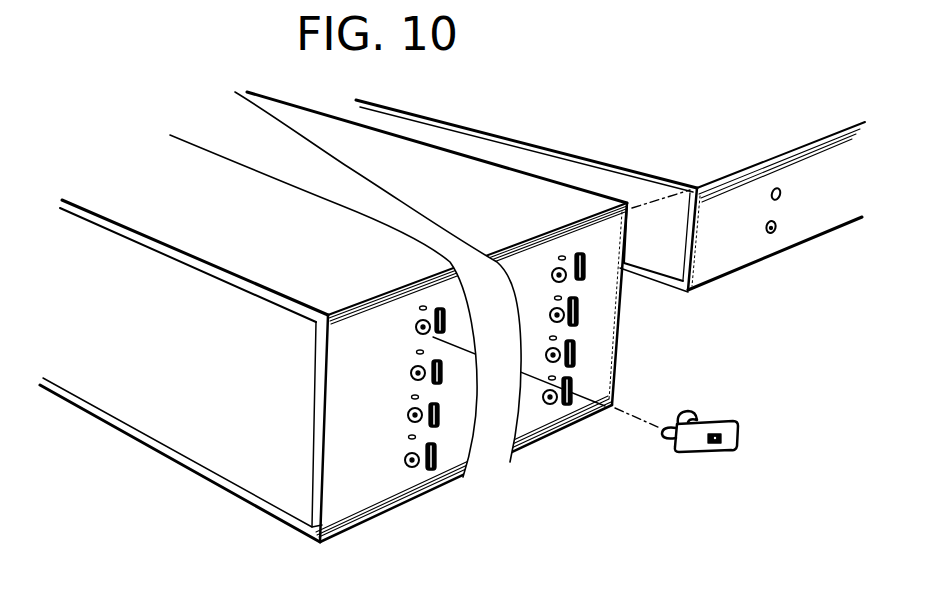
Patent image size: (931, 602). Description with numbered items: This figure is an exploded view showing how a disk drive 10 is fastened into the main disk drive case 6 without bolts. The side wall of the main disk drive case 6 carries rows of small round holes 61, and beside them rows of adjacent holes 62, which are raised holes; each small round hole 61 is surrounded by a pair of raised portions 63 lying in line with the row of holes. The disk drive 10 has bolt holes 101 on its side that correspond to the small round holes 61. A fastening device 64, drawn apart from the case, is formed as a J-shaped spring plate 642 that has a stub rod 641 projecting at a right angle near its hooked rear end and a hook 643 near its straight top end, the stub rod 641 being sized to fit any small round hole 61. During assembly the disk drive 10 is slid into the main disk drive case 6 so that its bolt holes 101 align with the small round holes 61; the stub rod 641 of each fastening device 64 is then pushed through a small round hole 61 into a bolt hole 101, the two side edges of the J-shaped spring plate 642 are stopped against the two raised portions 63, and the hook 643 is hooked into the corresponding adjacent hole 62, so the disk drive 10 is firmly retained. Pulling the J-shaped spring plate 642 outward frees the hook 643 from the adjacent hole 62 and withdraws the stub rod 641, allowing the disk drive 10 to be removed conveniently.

The main disk drive case 6 is at (333, 344).
The small round hole 61 is at (417, 467).
The adjacent hole 62 is at (442, 462).
The raised portion 63 is at (418, 462).
The fastening device 64 is at (683, 446).
The stub rod 641 is at (665, 433).
The J-shaped spring plate 642 is at (700, 420).
The hook 643 is at (715, 444).
The disk drive 10 is at (610, 230).
The bolt hole 101 is at (773, 234).